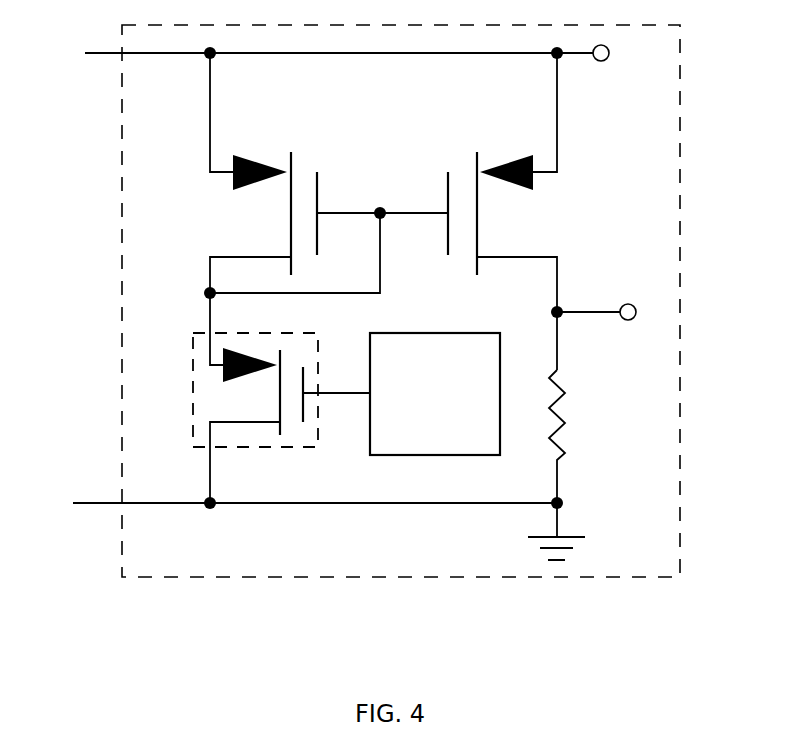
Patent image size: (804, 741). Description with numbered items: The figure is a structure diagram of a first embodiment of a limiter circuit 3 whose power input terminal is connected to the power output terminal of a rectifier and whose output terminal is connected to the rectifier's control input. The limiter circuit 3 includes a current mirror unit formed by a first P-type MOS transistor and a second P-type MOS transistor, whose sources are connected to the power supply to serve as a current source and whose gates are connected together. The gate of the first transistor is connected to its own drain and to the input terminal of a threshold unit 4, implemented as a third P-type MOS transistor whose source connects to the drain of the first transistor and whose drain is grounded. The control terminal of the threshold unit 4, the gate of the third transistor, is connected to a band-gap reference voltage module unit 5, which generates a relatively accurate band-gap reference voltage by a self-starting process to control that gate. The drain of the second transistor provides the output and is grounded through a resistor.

The limiter circuit 3 is at (390, 350).
The threshold unit 4 is at (207, 387).
The band-gap reference voltage module unit 5 is at (400, 438).